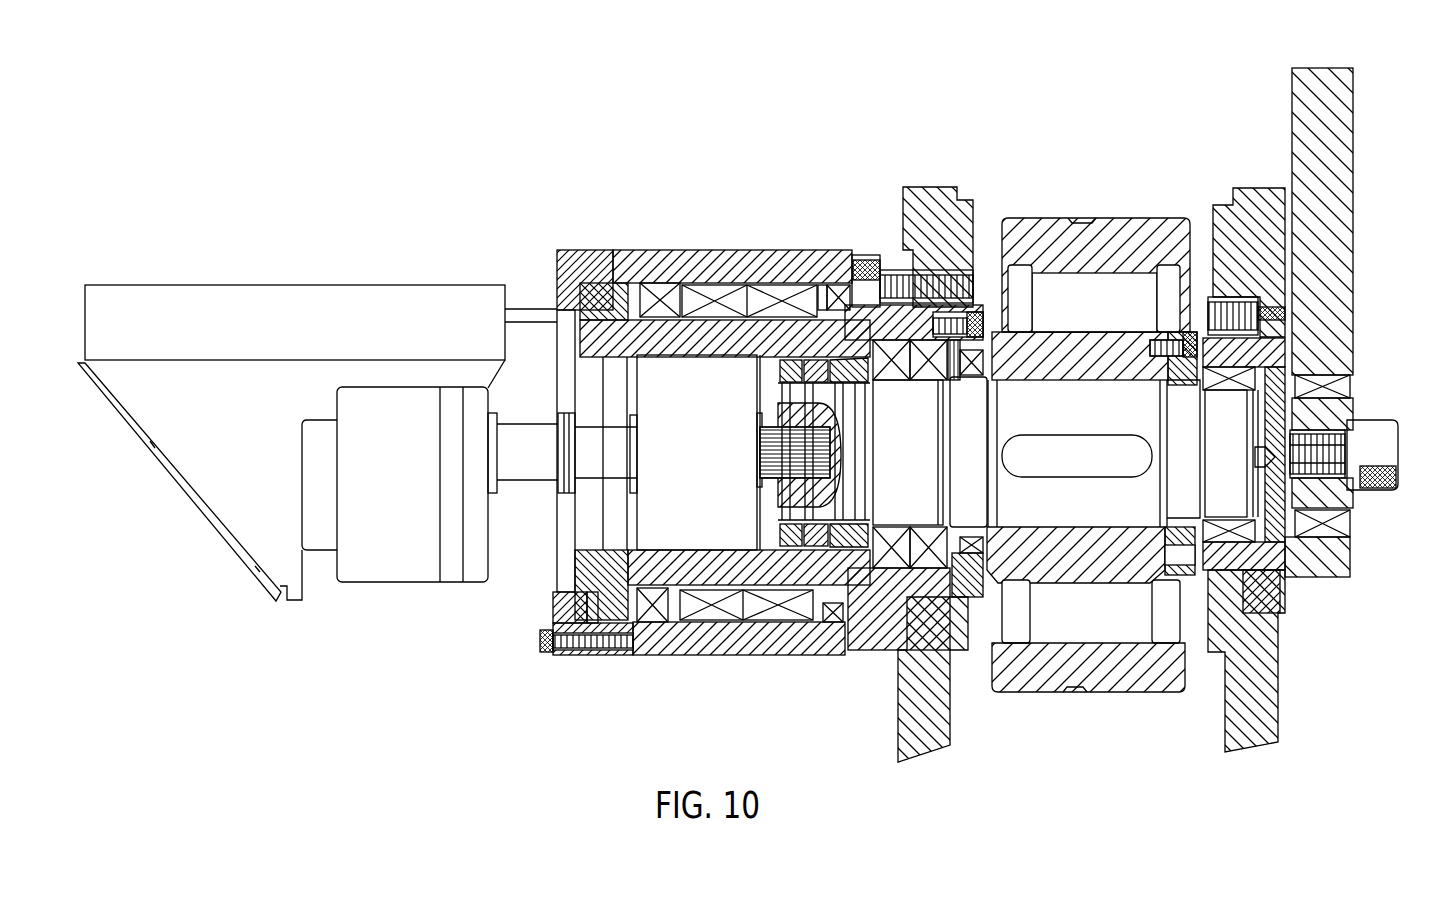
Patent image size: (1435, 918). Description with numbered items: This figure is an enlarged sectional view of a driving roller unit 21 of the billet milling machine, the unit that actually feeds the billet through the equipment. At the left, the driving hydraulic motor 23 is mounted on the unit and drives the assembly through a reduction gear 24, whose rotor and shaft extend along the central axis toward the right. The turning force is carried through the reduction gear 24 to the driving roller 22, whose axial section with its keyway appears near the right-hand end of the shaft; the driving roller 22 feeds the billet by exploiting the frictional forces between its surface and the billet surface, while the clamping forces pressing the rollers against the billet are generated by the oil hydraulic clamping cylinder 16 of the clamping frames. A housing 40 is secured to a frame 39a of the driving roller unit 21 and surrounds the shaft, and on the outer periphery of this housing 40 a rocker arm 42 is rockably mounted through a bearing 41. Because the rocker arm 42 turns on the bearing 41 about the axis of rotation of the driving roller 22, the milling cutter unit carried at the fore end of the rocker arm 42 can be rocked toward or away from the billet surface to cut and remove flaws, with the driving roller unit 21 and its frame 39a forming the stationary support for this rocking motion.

The oil hydraulic clamping cylinder 16 is at (1266, 721).
The driving roller unit 21 is at (594, 250).
The driving roller 22 is at (548, 423).
The driving hydraulic motor 23 is at (397, 560).
The reduction gear 24 is at (670, 515).
The frame 39a is at (920, 752).
The housing 40 is at (800, 333).
The bearing 41 is at (712, 612).
The rocker arm 42 is at (712, 265).